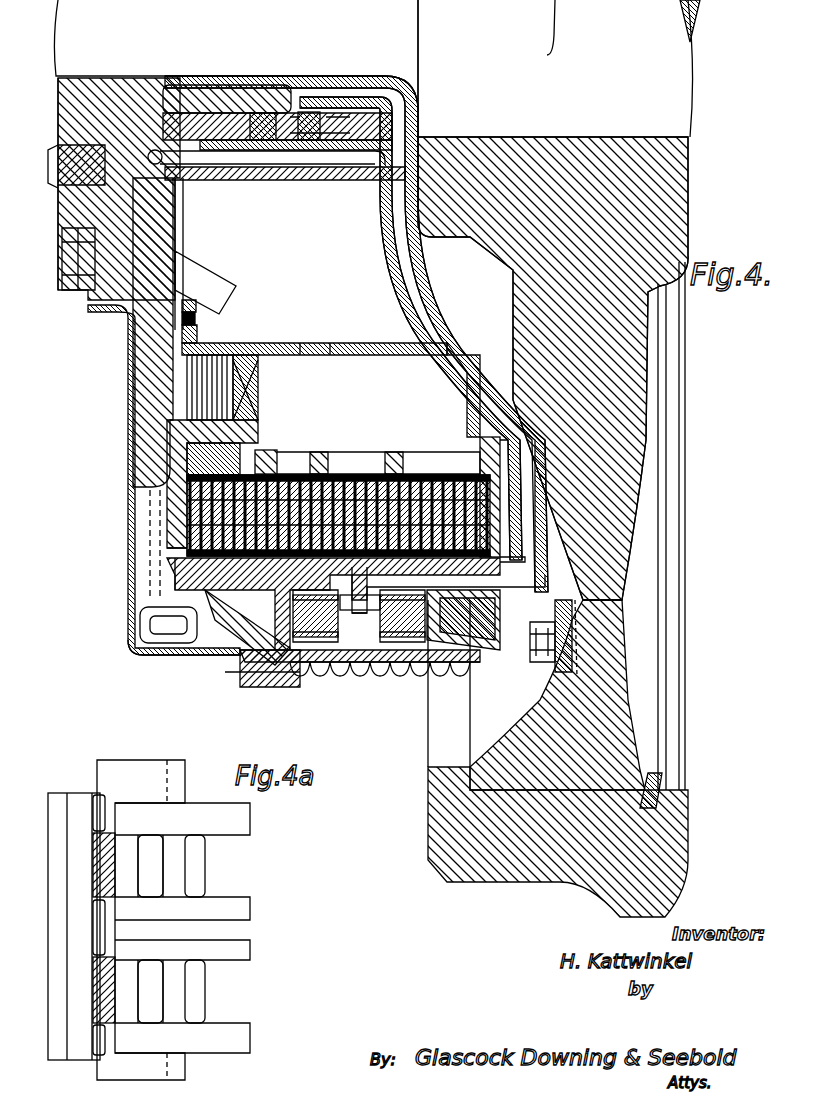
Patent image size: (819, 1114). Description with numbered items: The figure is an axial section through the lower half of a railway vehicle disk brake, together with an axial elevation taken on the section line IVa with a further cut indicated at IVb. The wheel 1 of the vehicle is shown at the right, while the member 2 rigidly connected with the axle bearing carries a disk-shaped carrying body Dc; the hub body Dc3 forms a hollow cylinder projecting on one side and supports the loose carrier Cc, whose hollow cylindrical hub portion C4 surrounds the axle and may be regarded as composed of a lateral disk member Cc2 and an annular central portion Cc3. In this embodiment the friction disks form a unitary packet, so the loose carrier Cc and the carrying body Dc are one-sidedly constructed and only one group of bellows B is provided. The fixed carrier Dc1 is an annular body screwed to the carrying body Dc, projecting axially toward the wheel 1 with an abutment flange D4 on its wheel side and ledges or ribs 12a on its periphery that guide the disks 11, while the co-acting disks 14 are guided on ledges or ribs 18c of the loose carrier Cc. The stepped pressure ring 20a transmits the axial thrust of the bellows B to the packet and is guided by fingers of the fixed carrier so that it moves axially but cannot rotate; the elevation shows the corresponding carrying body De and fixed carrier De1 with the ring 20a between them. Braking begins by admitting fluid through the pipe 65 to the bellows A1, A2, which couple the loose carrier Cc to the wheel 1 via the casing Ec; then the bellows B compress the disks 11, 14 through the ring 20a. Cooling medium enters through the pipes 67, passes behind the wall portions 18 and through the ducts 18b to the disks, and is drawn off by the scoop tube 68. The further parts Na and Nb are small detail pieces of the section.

In FIG. 4, the wheel 1 is at (530, 735).
In FIG. 4, the axle bearing member 2 is at (100, 278).
In FIG. 4, the friction disks 11 is at (295, 472).
In FIG. 4, the ledges or ribs 12a is at (436, 476).
In FIG. 4, the co-acting friction disks 14 is at (192, 522).
In FIG. 4, the wall portions 18 is at (312, 345).
In FIG. 4, the ducts 18b is at (388, 345).
In FIG. 4, the ledges or ribs 18c is at (175, 552).
In FIG. 4, the pressure ring 20a is at (258, 400).
In FIG. 4A, the pressure ring 20a is at (180, 782).
In FIG. 4, the pipe 65 is at (446, 307).
In FIG. 4, the pipes 67 is at (208, 286).
In FIG. 4, the collecting pipe 68 is at (138, 656).
In FIG. 4, the pressure appliance bellows A1 is at (310, 630).
In FIG. 4, the pressure appliance bellows A2 is at (397, 632).
In FIG. 4, the bellows B is at (212, 380).
In FIG. 4, the hollow cylindrical hub portion C4 is at (218, 92).
In FIG. 4, the loose carrier Cc is at (207, 645).
In FIG. 4, the lateral disk member of loose carrier Cc2 is at (555, 498).
In FIG. 4, the annular central portion of loose carrier Cc3 is at (362, 628).
In FIG. 4, the carrying body Dc is at (143, 358).
In FIG. 4, the fixed carrier Dc1 is at (323, 455).
In FIG. 4, the hub body Dc3 is at (320, 150).
In FIG. 4, the abutment flange D4 is at (484, 474).
In FIG. 4A, the carrying body De is at (80, 885).
In FIG. 4A, the fixed carrier De1 is at (232, 908).
In FIG. 4, the casing Ec is at (123, 612).
In FIG. 4, the section line IVa is at (54, 492).
In FIG. 4, the section line IVb is at (208, 318).
In FIG. 4, the tab Na is at (252, 468).
In FIG. 4, the bracket Nb is at (343, 620).